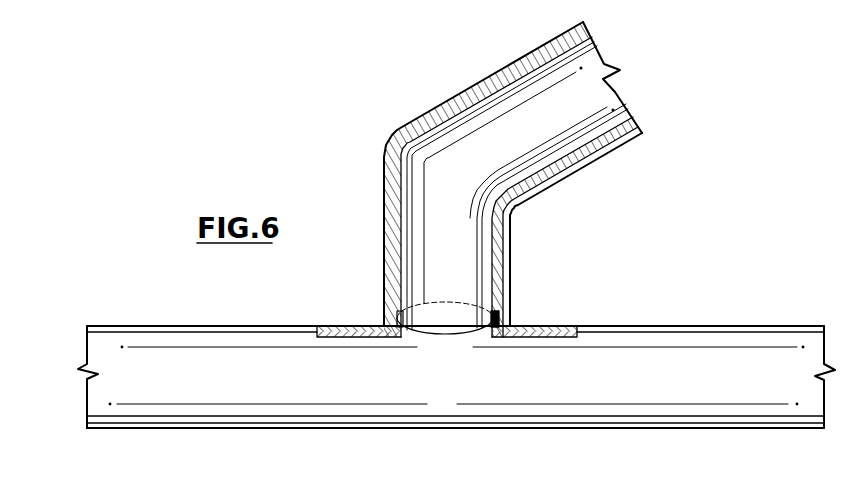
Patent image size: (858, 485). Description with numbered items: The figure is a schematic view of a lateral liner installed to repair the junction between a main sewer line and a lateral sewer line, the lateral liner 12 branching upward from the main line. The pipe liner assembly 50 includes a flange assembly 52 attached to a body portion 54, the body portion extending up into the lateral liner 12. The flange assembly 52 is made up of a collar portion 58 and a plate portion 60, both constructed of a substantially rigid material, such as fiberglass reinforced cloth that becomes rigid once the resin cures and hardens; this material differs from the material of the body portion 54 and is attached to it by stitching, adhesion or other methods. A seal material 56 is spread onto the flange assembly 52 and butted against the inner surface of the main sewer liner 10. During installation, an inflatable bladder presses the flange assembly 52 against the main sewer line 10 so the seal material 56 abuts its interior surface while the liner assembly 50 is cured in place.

The main sewer liner 10 is at (661, 351).
The branch pipe 12 is at (512, 228).
The pipe liner assembly 50 is at (618, 215).
The flange assembly 52 is at (477, 357).
The body portion 54 is at (495, 263).
The seal material 56 is at (550, 325).
The collar portion 58 is at (489, 321).
The plate portion 60 is at (532, 338).